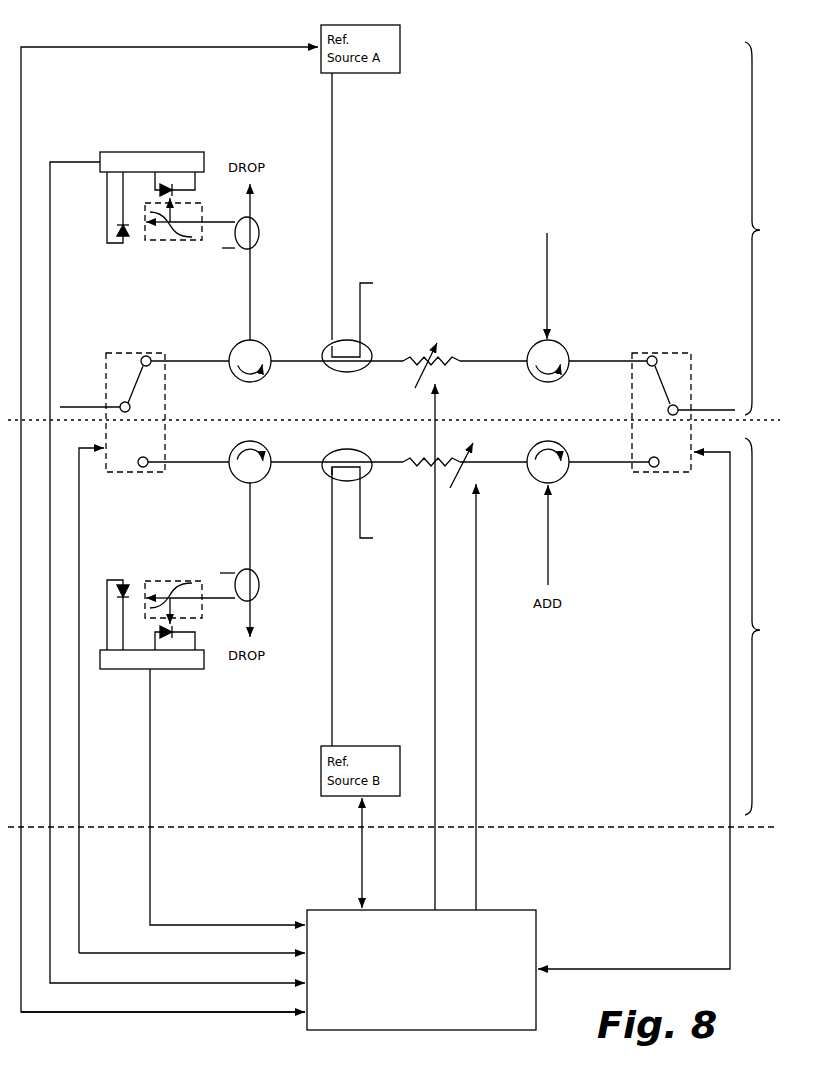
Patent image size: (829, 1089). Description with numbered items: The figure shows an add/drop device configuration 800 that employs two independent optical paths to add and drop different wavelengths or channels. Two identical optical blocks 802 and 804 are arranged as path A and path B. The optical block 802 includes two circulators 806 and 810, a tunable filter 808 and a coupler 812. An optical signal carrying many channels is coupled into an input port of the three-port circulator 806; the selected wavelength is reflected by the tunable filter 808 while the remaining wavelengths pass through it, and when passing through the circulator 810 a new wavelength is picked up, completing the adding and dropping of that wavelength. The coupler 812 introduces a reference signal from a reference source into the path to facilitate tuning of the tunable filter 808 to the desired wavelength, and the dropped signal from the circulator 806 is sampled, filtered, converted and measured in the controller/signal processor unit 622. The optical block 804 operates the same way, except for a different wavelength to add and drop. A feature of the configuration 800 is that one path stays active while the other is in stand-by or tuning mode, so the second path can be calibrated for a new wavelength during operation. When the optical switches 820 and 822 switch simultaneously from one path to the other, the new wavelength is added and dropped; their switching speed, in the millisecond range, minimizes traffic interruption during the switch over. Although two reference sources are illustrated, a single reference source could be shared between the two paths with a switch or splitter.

The configuration 800 is at (573, 43).
The optical block 802 is at (472, 228).
The optical block 804 is at (471, 626).
The circulator 806 is at (280, 333).
The tunable filter 808 is at (445, 350).
The circulator 810 is at (557, 345).
The coupler 812 is at (360, 342).
The optical switch 820 is at (130, 352).
The optical switch 822 is at (665, 352).
The controller/signal processor unit 622 is at (421, 970).